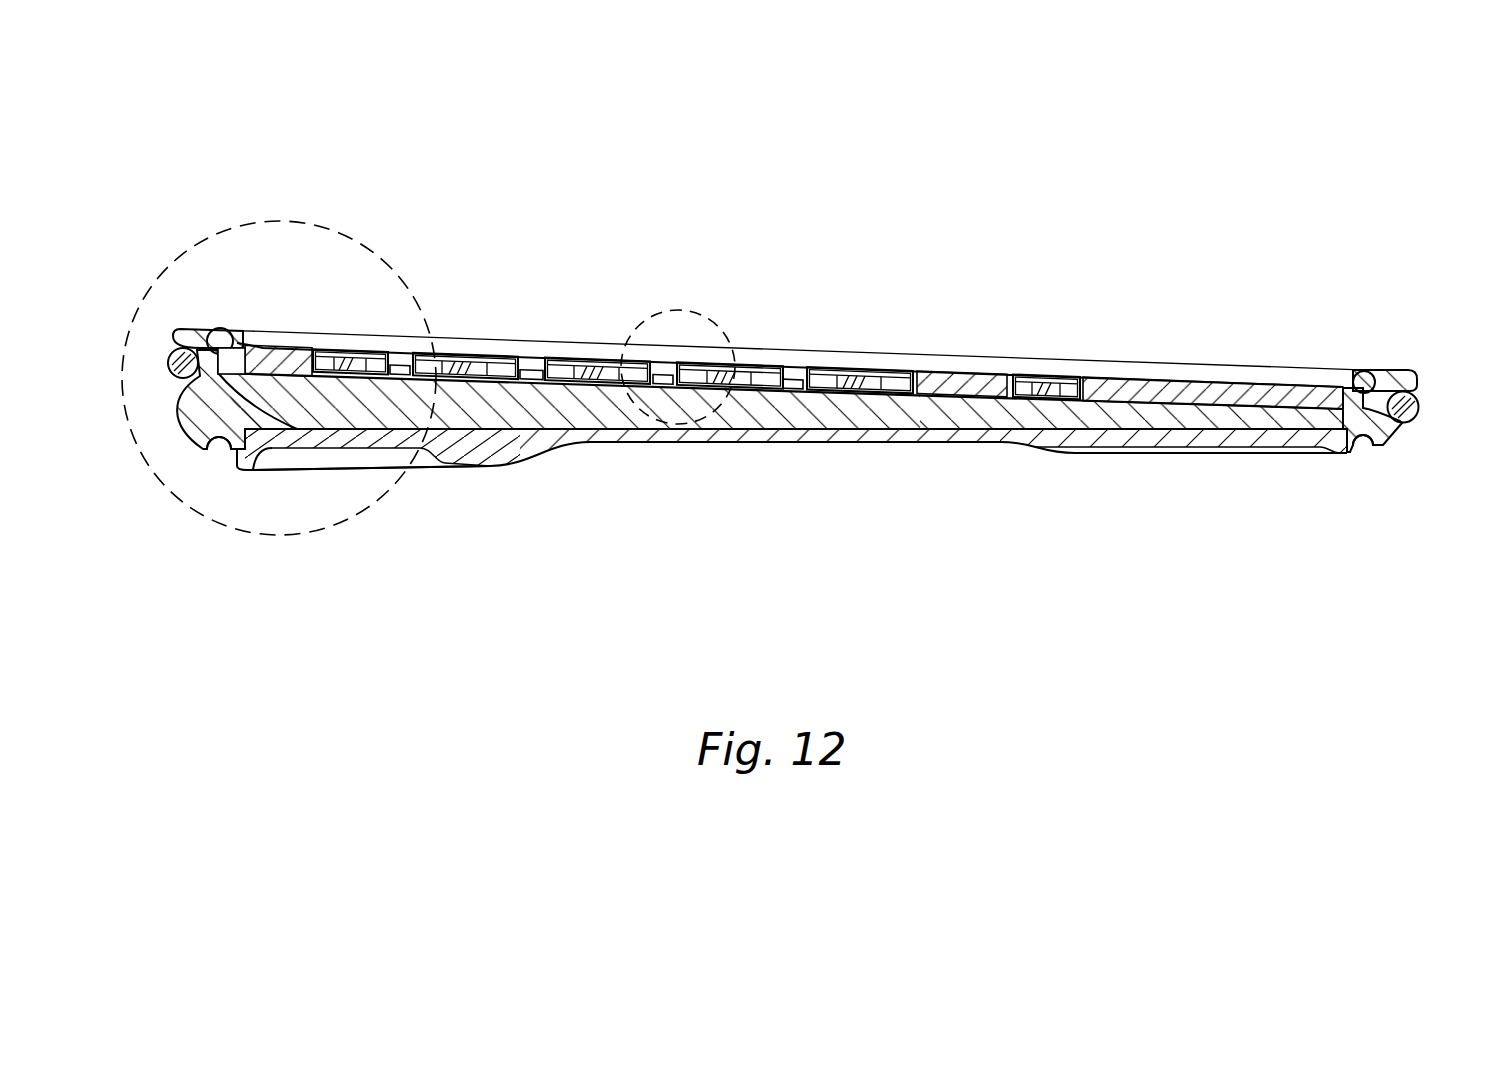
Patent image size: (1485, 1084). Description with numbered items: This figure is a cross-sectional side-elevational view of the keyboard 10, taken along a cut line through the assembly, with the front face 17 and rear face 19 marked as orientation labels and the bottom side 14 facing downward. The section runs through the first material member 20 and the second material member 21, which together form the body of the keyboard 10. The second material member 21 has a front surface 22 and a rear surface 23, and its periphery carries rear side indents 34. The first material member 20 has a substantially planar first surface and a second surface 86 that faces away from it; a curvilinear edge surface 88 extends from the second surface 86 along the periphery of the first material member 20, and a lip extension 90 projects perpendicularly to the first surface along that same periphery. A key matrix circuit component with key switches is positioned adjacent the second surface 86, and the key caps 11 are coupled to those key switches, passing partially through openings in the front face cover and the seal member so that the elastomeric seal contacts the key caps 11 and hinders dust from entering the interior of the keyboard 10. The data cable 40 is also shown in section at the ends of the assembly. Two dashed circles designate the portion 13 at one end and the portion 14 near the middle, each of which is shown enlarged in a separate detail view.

The keyboard 10 is at (1154, 163).
The key caps 11 is at (828, 365).
The dashed-circle-designated portion 13 is at (353, 240).
The bottom side 14 is at (705, 310).
The front face 17 is at (902, 274).
The rear face 19 is at (758, 485).
The first material member 20 is at (947, 413).
The second material member 21 is at (1053, 447).
The front surface 22 is at (1400, 372).
The rear surface 23 is at (1100, 457).
The rear side indents 34 is at (217, 444).
The data cable 40 is at (168, 361).
The second surface 86 is at (495, 444).
The curvilinear edge surface 88 is at (190, 437).
The lip extension 90 is at (205, 330).